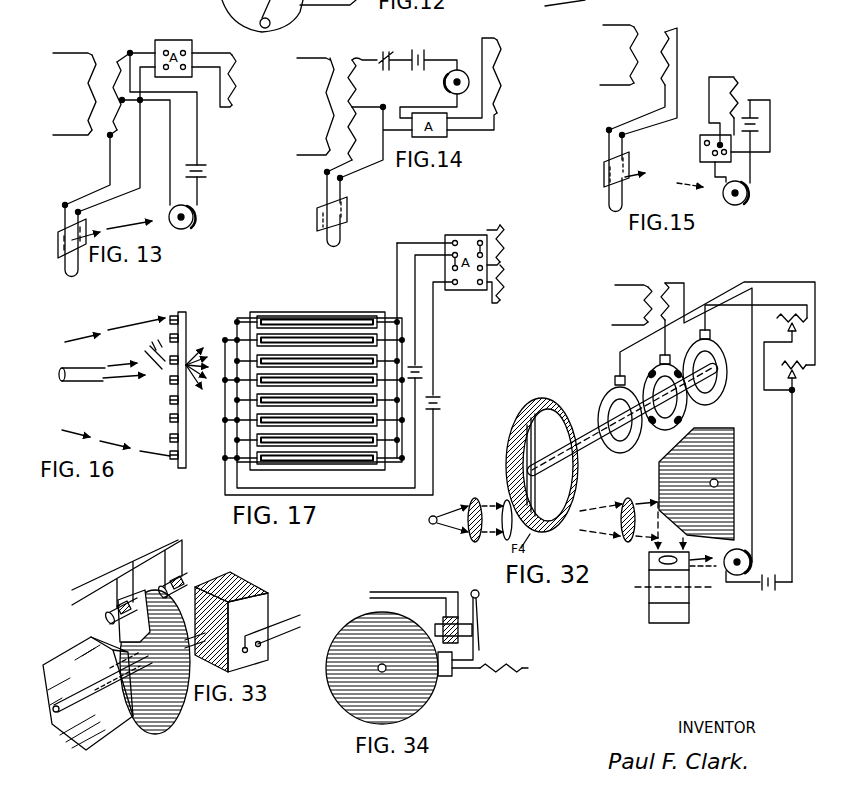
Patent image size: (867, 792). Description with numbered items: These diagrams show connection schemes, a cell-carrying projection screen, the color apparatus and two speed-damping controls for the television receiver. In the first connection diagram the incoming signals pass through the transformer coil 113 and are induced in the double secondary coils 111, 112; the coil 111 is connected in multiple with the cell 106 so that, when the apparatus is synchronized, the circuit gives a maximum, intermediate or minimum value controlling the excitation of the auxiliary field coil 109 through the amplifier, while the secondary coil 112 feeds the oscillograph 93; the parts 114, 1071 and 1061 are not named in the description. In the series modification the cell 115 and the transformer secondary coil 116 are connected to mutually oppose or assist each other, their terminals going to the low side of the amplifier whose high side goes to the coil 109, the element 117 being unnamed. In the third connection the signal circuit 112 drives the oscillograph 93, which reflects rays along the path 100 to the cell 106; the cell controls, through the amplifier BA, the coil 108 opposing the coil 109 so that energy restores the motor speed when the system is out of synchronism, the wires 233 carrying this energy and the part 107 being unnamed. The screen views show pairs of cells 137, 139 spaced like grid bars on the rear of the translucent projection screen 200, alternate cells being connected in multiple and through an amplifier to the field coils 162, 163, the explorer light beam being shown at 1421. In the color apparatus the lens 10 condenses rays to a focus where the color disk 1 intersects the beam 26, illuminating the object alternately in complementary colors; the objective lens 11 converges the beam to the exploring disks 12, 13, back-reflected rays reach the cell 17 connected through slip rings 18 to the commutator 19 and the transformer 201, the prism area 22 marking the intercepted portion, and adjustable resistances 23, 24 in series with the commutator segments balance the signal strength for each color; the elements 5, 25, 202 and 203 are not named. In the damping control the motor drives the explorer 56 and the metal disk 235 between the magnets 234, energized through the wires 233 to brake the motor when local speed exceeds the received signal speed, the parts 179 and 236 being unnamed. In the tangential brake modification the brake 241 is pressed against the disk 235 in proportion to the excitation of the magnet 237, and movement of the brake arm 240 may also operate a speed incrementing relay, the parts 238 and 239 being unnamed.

In FIG. 13, the secondary coil 111 is at (117, 62).
In FIG. 13, the transformer coil 113 is at (90, 108).
In FIG. 14, the transformer coil 113 is at (315, 106).
In FIG. 15, the transformer coil 113 is at (619, 55).
In FIG. 13, the secondary coil 112 is at (107, 137).
In FIG. 15, the secondary coil 112 is at (658, 31).
In FIG. 13, the auxiliary field coil 109 is at (238, 106).
In FIG. 14, the auxiliary field coil 109 is at (487, 84).
In FIG. 13, the battery 1071 is at (208, 163).
In FIG. 13, the motor 1061 is at (186, 227).
In FIG. 13, the oscillograph 93 is at (61, 241).
In FIG. 14, the oscillograph 93 is at (322, 209).
In FIG. 15, the oscillograph 93 is at (631, 166).
In FIG. 13, the light rays 114 is at (112, 229).
In FIG. 14, the transformer secondary coil 116 is at (366, 82).
In FIG. 14, the resistance 117 is at (355, 139).
In FIG. 14, the cell 115 is at (463, 71).
In FIG. 15, the wires 233 is at (700, 137).
In FIG. 33, the wires 233 is at (98, 576).
In FIG. 34, the wires 233 is at (430, 594).
In FIG. 15, the coil 108 is at (734, 104).
In FIG. 15, the battery 107 is at (760, 116).
In FIG. 15, the cell 106 is at (744, 186).
In FIG. 15, the beam 100 is at (676, 183).
In FIG. 16, the cells 137 is at (151, 352).
In FIG. 17, the cells 137 is at (356, 338).
In FIG. 16, the cells 139 is at (170, 416).
In FIG. 17, the cells 139 is at (288, 338).
In FIG. 16, the light beam 1421 is at (102, 385).
In FIG. 16, the translucent projection screen 200 is at (184, 462).
In FIG. 17, the translucent projection screen 200 is at (345, 469).
In FIG. 17, the field coil 162 is at (510, 245).
In FIG. 17, the field coil 163 is at (510, 284).
In FIG. 32, the color disk 1 is at (512, 442).
In FIG. 32, the light source 5 is at (448, 525).
In FIG. 32, the lens 10 is at (480, 536).
In FIG. 32, the beam 26 is at (504, 506).
In FIG. 32, the objective lens 11 is at (618, 512).
In FIG. 32, the exploring disk 12 is at (696, 488).
In FIG. 32, the exploring disk 13 is at (670, 587).
In FIG. 32, the cell 17 is at (758, 562).
In FIG. 32, the slip rings 18 is at (612, 392).
In FIG. 32, the commutator 19 is at (660, 374).
In FIG. 32, the prism area 22 is at (704, 352).
In FIG. 32, the adjustable resistance 23 is at (791, 464).
In FIG. 32, the adjustable resistance 24 is at (779, 352).
In FIG. 32, the battery 25 is at (777, 593).
In FIG. 32, the transformer 201 is at (703, 413).
In FIG. 32, the resistance 202 is at (632, 305).
In FIG. 32, the shaft 203 is at (612, 446).
In FIG. 33, the explorer 56 is at (97, 693).
In FIG. 33, the magnets 234 is at (108, 622).
In FIG. 33, the metal disk 235 is at (161, 662).
In FIG. 34, the metal disk 235 is at (382, 668).
In FIG. 33, the housing 179 is at (231, 622).
In FIG. 33, the conductors 236 is at (270, 614).
In FIG. 34, the magnet 237 is at (450, 618).
In FIG. 34, the pivot 238 is at (480, 625).
In FIG. 34, the brake arm 240 is at (482, 646).
In FIG. 34, the resistance 239 is at (490, 659).
In FIG. 34, the brake 241 is at (438, 656).